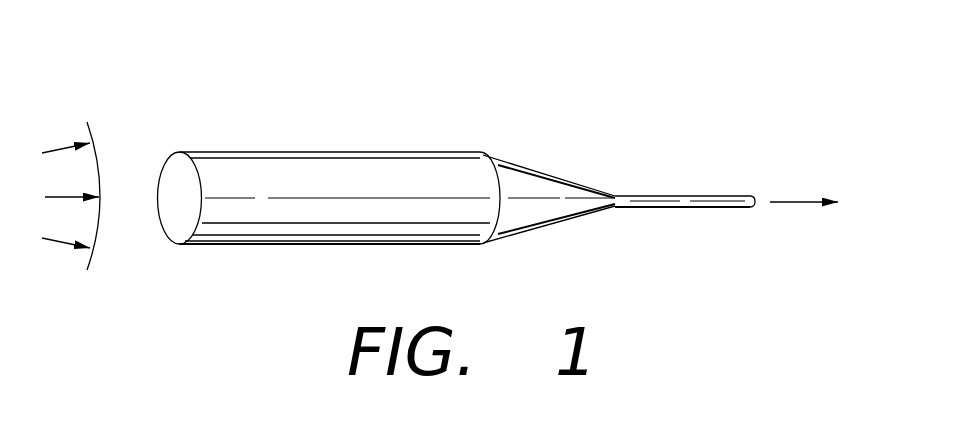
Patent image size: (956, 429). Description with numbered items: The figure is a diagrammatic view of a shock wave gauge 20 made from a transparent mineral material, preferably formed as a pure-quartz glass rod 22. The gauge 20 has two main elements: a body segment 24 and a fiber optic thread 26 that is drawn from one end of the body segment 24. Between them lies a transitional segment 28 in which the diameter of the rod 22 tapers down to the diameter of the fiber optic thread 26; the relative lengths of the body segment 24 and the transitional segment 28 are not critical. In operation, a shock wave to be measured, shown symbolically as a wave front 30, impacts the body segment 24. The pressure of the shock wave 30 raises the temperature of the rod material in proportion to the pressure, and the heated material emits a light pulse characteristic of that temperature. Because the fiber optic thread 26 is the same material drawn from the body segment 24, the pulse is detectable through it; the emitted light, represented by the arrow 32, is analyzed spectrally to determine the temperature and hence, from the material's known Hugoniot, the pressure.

The shock wave gauge 20 is at (253, 70).
The pure-quartz glass rod 22 is at (218, 245).
The body segment 24 is at (182, 143).
The fiber optic thread 26 is at (688, 207).
The transitional segment 28 is at (485, 143).
The wave front 30 is at (88, 262).
The arrow 32 is at (800, 201).